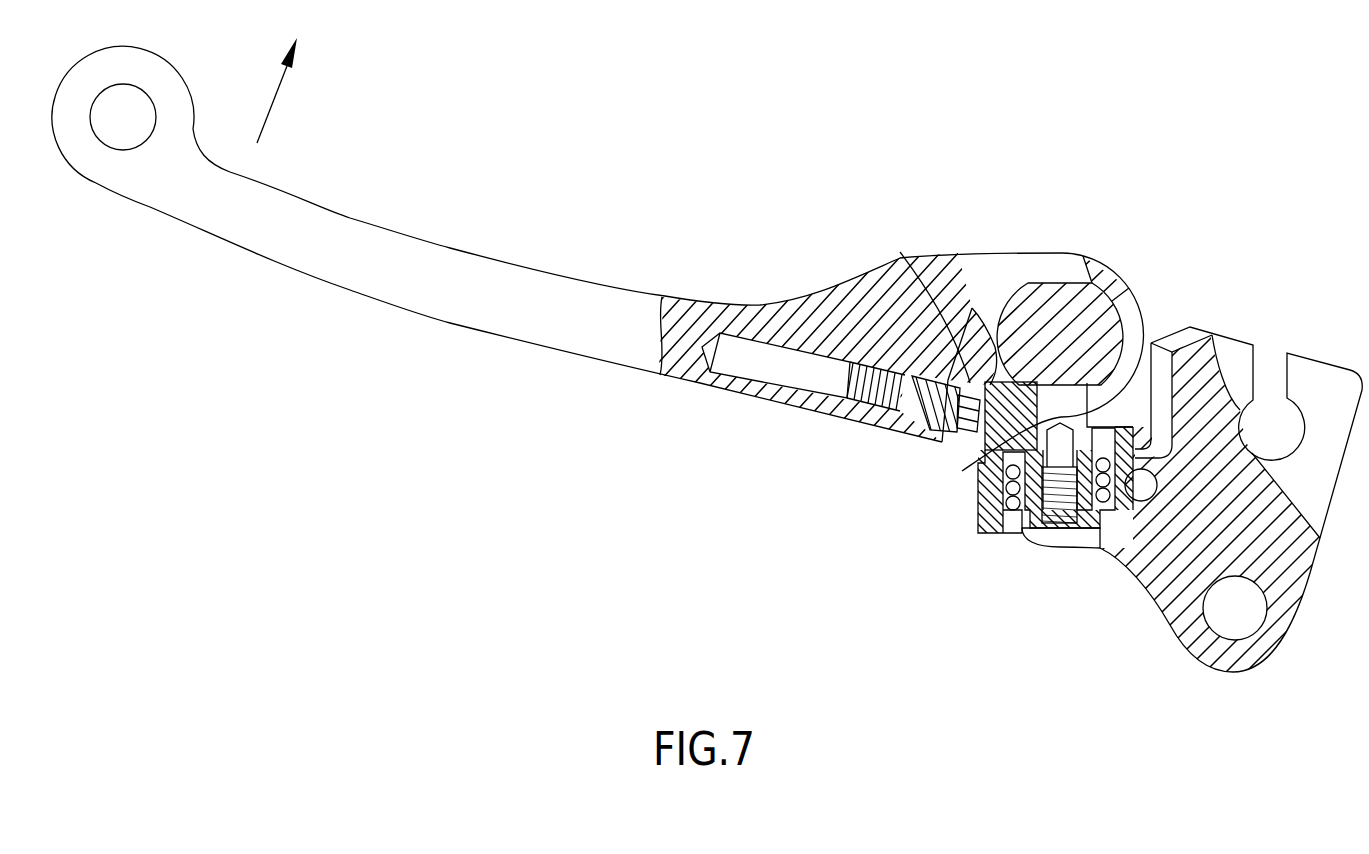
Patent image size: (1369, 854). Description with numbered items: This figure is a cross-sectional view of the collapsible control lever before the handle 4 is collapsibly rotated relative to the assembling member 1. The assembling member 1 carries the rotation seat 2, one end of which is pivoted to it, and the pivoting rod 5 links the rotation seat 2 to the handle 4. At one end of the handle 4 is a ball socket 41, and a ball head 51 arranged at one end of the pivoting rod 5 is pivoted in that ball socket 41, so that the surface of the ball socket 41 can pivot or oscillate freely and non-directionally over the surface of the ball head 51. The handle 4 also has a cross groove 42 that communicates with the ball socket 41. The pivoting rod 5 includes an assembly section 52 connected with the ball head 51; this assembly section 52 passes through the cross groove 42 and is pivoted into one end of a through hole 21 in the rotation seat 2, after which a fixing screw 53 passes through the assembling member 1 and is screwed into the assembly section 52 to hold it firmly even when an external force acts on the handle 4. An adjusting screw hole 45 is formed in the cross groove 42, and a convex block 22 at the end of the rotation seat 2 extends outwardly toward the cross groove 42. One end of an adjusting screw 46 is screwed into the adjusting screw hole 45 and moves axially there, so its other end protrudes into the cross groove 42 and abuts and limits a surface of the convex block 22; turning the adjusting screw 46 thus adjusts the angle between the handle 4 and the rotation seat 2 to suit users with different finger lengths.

The assembling member 1 is at (1252, 320).
The rotation seat 2 is at (1123, 437).
The handle 4 is at (705, 263).
The pivoting rod 5 is at (1002, 288).
The through hole 21 is at (987, 458).
The convex block 22 is at (930, 307).
The ball socket 41 is at (1075, 268).
The cross groove 42 is at (1117, 292).
The adjusting screw hole 45 is at (845, 402).
The adjusting screw 46 is at (893, 423).
The ball head 51 is at (1035, 283).
The assembly section 52 is at (990, 430).
The fixing screw 53 is at (1060, 523).